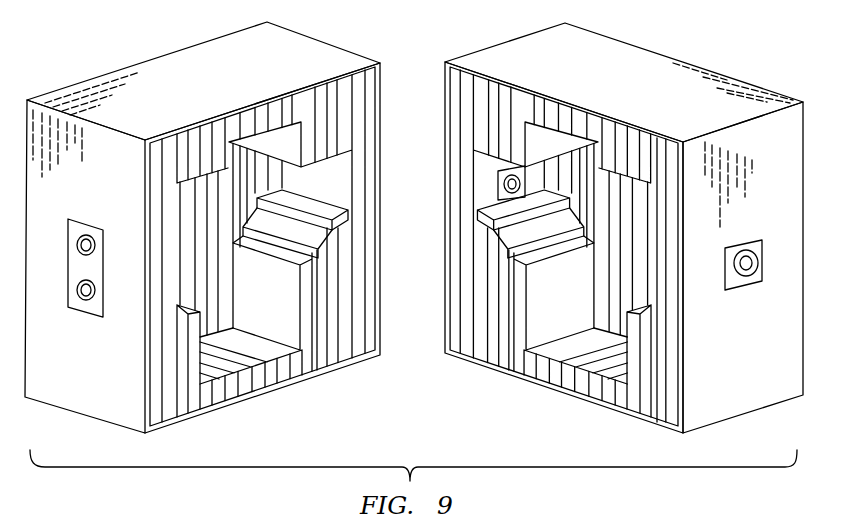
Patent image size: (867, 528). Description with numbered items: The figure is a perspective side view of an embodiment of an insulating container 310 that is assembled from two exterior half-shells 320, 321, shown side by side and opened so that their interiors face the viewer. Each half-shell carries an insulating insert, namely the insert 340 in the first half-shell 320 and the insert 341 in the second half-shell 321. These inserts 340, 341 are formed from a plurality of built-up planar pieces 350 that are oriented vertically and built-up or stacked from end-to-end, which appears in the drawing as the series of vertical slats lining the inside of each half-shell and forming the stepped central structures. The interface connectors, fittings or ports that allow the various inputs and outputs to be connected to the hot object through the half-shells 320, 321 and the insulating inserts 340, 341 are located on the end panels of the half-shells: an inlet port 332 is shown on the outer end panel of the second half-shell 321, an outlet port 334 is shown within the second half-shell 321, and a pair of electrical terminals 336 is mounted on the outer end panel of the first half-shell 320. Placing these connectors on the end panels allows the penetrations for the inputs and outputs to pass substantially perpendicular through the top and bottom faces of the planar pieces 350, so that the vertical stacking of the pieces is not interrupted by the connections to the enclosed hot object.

The insulating container 310 is at (694, 33).
The exterior half-shell 320 is at (145, 61).
The exterior half-shell 321 is at (720, 73).
The inlet port 332 is at (743, 272).
The outlet port 334 is at (498, 193).
The electrical terminals 336 is at (83, 268).
The insert 340 is at (168, 388).
The insert 341 is at (660, 390).
The planar pieces 350 is at (474, 284).